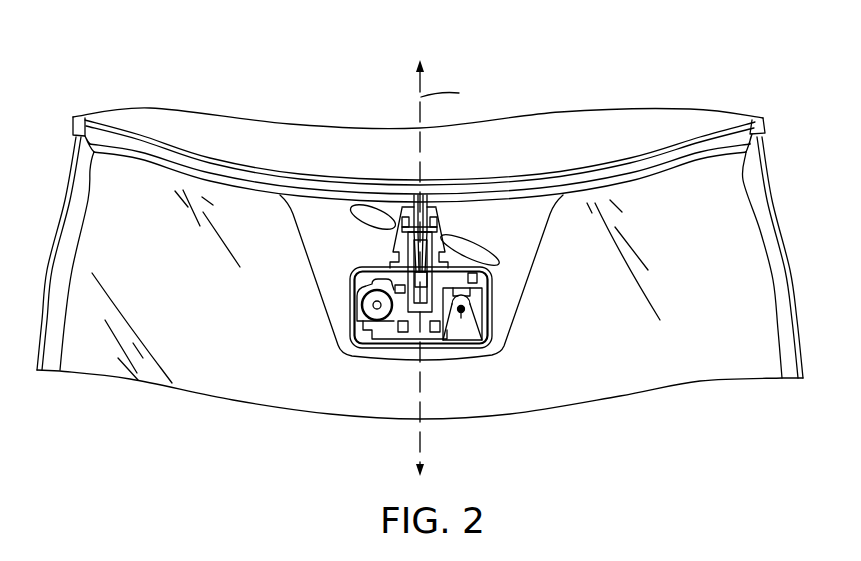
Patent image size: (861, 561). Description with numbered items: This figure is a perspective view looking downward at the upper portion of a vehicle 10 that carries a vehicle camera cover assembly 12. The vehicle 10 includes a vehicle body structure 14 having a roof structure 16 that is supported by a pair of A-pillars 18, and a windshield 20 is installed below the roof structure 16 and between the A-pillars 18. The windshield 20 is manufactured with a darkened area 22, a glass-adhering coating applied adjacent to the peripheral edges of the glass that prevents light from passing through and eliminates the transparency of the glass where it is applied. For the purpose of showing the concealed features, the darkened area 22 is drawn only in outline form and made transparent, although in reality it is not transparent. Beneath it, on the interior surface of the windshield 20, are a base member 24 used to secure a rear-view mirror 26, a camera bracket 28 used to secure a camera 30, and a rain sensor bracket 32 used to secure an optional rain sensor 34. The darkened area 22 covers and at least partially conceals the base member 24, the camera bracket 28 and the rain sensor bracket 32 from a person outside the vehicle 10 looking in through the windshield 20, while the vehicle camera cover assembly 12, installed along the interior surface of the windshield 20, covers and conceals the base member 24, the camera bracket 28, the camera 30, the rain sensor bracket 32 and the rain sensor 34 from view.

The vehicle 10 is at (160, 53).
The vehicle camera cover assembly 12 is at (502, 287).
The vehicle body structure 14 is at (644, 105).
The roof structure 16 is at (280, 147).
The A-pillars 18 is at (70, 232).
The windshield 20 is at (582, 362).
The darkened area 22 is at (300, 289).
The base member 24 is at (420, 282).
The rear-view mirror 26 is at (370, 222).
The camera bracket 28 is at (470, 317).
The camera 30 is at (461, 316).
The rain sensor bracket 32 is at (369, 290).
The rain sensor 34 is at (368, 307).